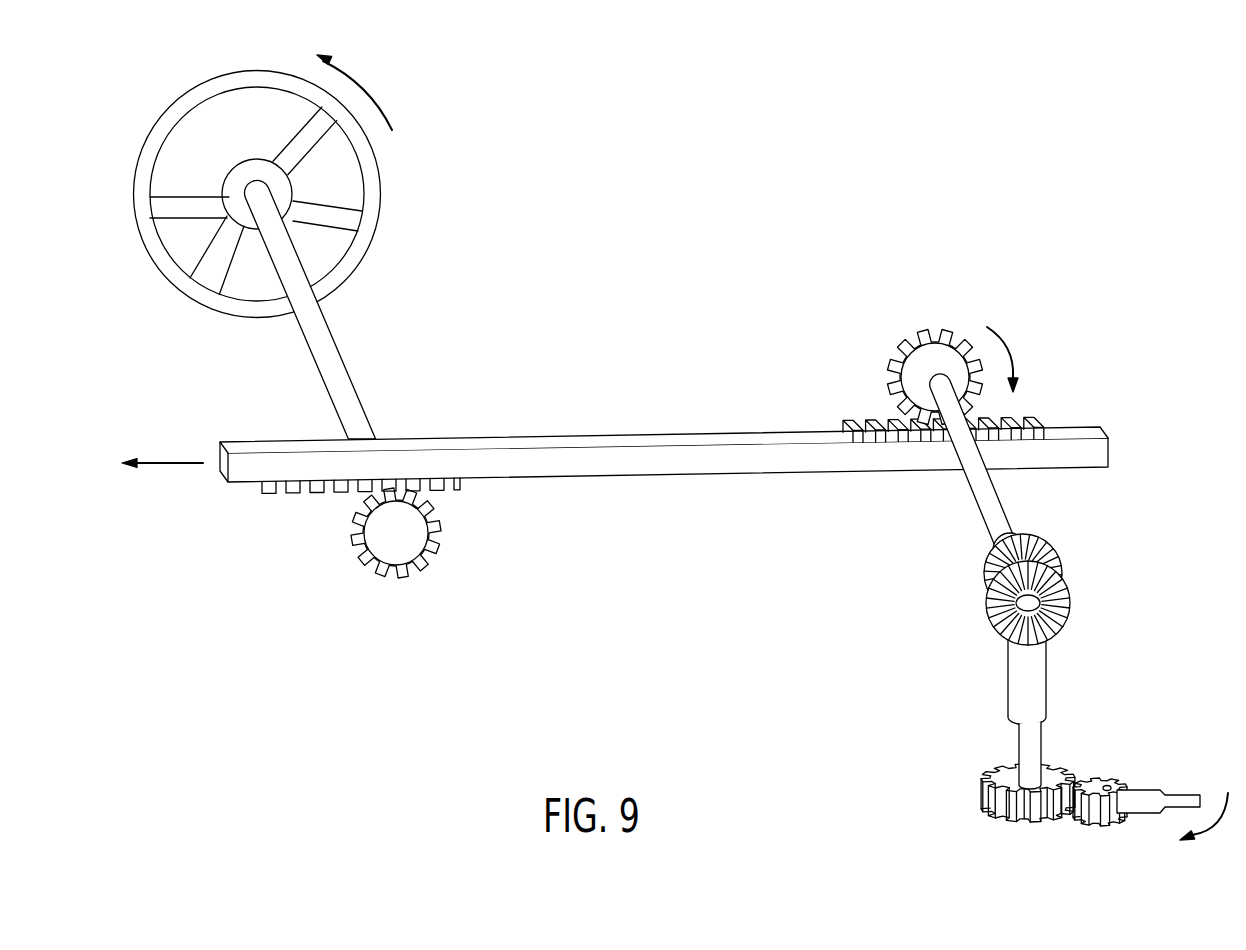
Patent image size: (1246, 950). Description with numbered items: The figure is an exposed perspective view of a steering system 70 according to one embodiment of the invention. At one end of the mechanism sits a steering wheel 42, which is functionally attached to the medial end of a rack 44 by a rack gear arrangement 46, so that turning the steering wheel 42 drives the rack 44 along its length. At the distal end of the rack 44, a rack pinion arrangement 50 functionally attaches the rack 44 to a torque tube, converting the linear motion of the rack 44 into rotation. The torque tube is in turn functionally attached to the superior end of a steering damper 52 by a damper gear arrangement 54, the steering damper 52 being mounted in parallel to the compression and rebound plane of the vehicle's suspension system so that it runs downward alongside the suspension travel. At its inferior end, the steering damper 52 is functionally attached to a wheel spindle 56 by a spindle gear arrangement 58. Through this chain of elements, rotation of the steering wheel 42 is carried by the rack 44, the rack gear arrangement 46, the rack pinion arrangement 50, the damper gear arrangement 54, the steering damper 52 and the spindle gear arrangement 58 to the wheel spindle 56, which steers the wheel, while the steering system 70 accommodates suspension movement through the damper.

The steering wheel 42 is at (258, 78).
The rack 44 is at (603, 455).
The rack gear arrangement 46 is at (415, 548).
The rack pinion arrangement 50 is at (930, 382).
The steering damper 52 is at (1028, 677).
The damper gear arrangement 54 is at (1042, 588).
The wheel spindle 56 is at (1138, 796).
The spindle gear arrangement 58 is at (1073, 810).
The steering system 70 is at (810, 244).